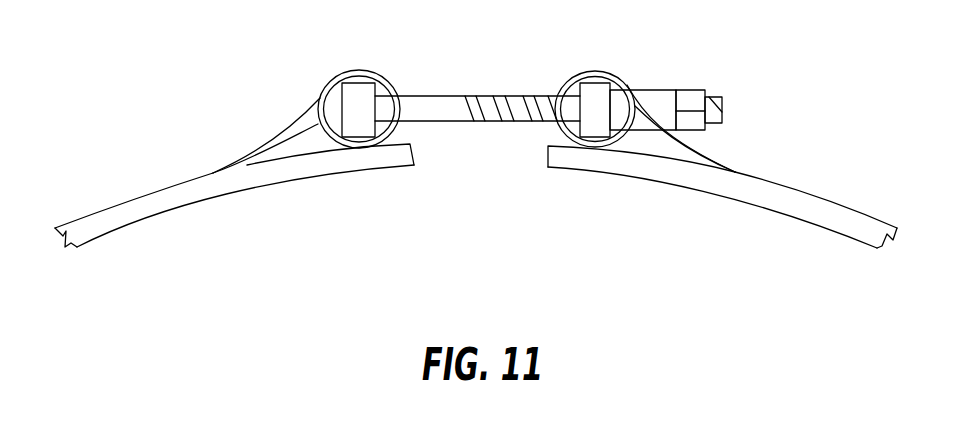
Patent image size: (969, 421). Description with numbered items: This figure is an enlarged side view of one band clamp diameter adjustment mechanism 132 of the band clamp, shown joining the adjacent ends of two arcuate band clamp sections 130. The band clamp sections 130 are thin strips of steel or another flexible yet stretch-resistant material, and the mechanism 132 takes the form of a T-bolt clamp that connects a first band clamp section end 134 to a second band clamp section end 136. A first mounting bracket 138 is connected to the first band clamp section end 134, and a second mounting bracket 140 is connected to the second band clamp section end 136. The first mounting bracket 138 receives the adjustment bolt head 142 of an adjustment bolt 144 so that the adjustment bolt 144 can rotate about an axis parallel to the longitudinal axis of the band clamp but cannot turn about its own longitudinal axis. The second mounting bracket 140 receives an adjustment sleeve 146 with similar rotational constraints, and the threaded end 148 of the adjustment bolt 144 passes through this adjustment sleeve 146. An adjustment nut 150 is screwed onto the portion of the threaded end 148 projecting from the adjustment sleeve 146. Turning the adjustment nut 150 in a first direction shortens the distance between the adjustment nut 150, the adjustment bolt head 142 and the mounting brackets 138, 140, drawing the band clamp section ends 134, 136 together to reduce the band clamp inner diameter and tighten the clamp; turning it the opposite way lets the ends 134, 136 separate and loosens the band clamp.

The band clamp section 130 is at (156, 213).
The band clamp diameter adjustment mechanism 132 is at (492, 48).
The first band clamp section end 134 is at (415, 157).
The second band clamp section end 136 is at (548, 157).
The first mounting bracket 138 is at (321, 88).
The second mounting bracket 140 is at (621, 74).
The adjustment bolt head 142 is at (361, 90).
The adjustment bolt 144 is at (420, 96).
The adjustment sleeve 146 is at (668, 90).
The threaded end 148 is at (723, 110).
The adjustment nut 150 is at (693, 125).